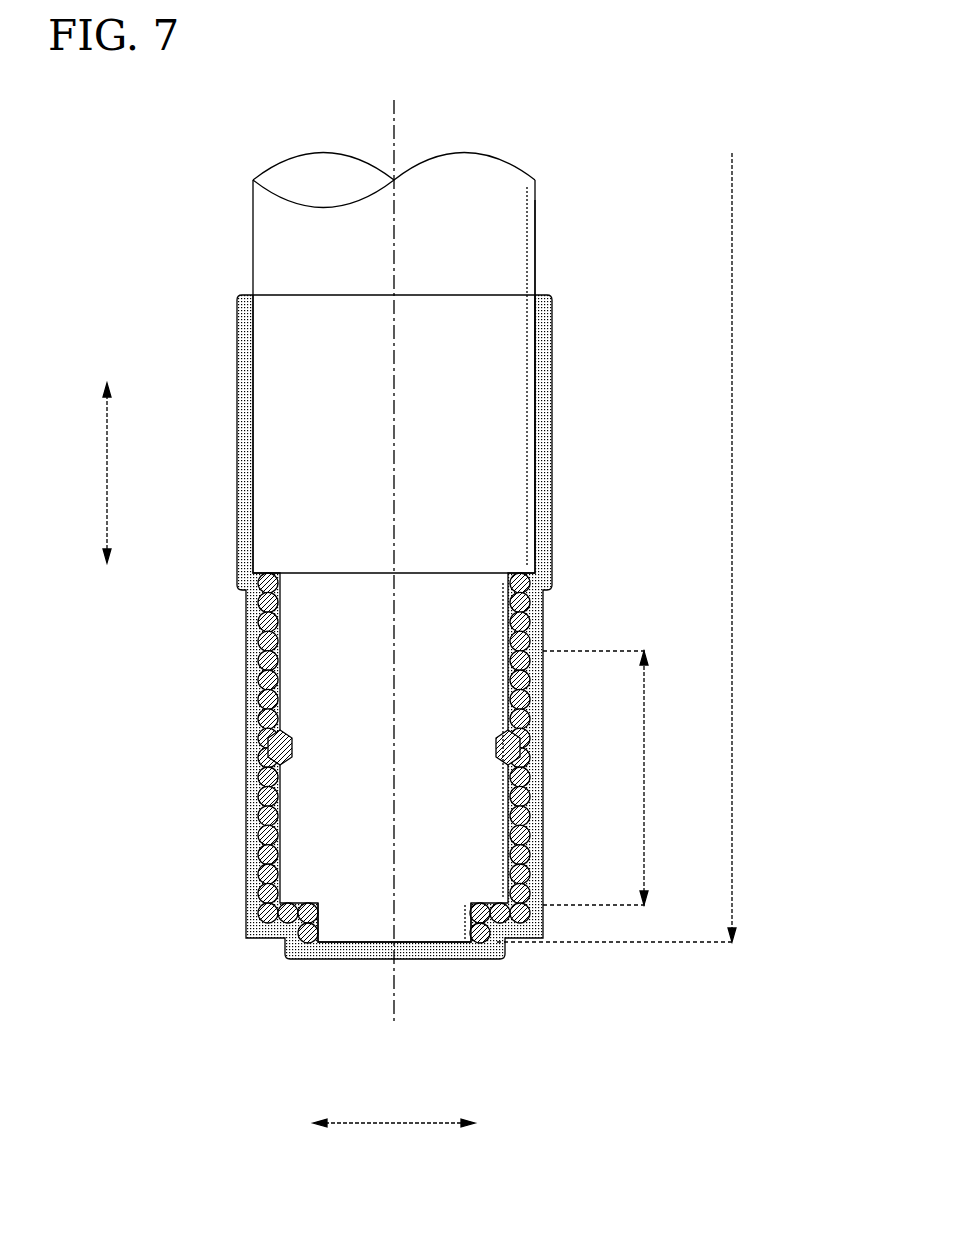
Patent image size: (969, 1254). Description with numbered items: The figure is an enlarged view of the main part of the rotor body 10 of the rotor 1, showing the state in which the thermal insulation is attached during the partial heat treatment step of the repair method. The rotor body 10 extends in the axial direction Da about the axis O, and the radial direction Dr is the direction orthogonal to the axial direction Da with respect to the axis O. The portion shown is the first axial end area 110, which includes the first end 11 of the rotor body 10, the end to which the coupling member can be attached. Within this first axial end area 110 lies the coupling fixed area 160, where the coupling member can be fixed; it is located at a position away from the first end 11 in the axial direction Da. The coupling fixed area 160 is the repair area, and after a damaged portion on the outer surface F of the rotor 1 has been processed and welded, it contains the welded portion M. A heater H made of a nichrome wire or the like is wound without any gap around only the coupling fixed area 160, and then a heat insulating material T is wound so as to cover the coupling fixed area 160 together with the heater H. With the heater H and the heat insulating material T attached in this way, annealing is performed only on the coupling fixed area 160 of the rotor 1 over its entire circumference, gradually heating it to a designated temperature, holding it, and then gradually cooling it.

The rotor 1 is at (600, 110).
The rotor body 10 is at (495, 226).
The first end 11 is at (355, 958).
The first axial end area 110 is at (673, 547).
The coupling fixed area 160 is at (618, 778).
The outer surface F is at (537, 263).
The heat insulating material T is at (547, 438).
The heater H is at (520, 624).
The welded portion M is at (280, 752).
The axis O is at (396, 1000).
The axial direction Da is at (98, 474).
The radial direction Dr is at (394, 1139).